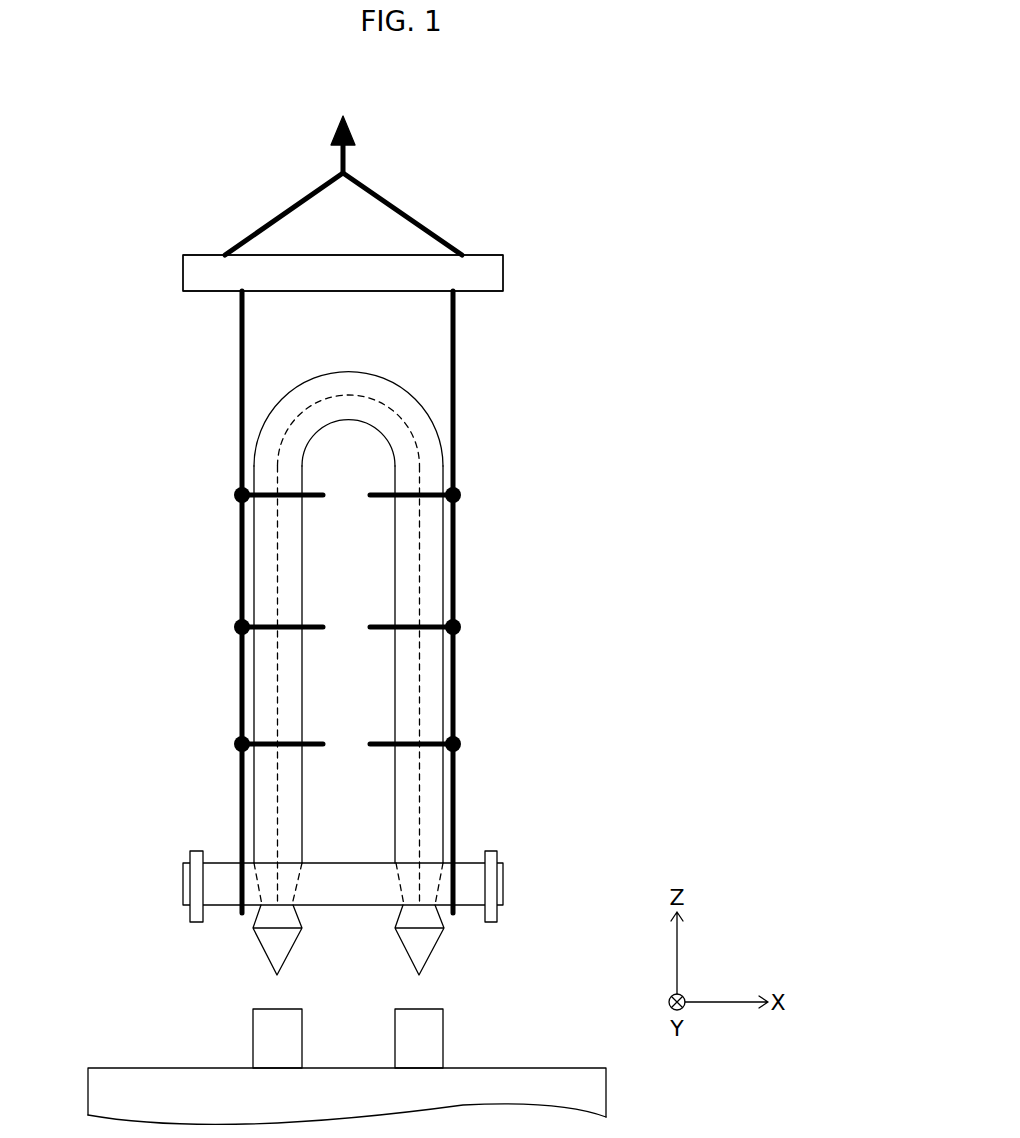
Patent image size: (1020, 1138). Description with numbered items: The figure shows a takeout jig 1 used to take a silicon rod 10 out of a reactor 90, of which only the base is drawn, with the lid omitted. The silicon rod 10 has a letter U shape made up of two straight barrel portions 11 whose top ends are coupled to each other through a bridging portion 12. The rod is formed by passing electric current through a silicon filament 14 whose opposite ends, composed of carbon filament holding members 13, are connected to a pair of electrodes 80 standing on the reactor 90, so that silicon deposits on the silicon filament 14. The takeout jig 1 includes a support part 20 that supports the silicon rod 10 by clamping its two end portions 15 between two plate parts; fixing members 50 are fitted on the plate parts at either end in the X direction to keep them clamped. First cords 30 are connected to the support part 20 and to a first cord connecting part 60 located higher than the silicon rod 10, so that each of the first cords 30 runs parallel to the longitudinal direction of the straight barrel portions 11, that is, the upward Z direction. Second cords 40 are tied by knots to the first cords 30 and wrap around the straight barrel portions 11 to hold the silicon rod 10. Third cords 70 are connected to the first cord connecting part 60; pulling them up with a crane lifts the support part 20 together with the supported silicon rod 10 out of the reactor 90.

The takeout jig 1 is at (478, 125).
The silicon rod 10 is at (355, 358).
The straight barrel portions 11 is at (253, 595).
The bridging portion 12 is at (398, 384).
The filament holding members 13 is at (402, 950).
The silicon filament 14 is at (421, 592).
The end portions 15 is at (440, 876).
The support part 20 is at (472, 862).
The first cords 30 is at (239, 332).
The second cords 40 is at (405, 493).
The fixing members 50 is at (194, 922).
The first cord connecting part 60 is at (503, 272).
The third cords 70 is at (405, 213).
The electrodes 80 is at (395, 1022).
The reactor 90 is at (606, 1090).